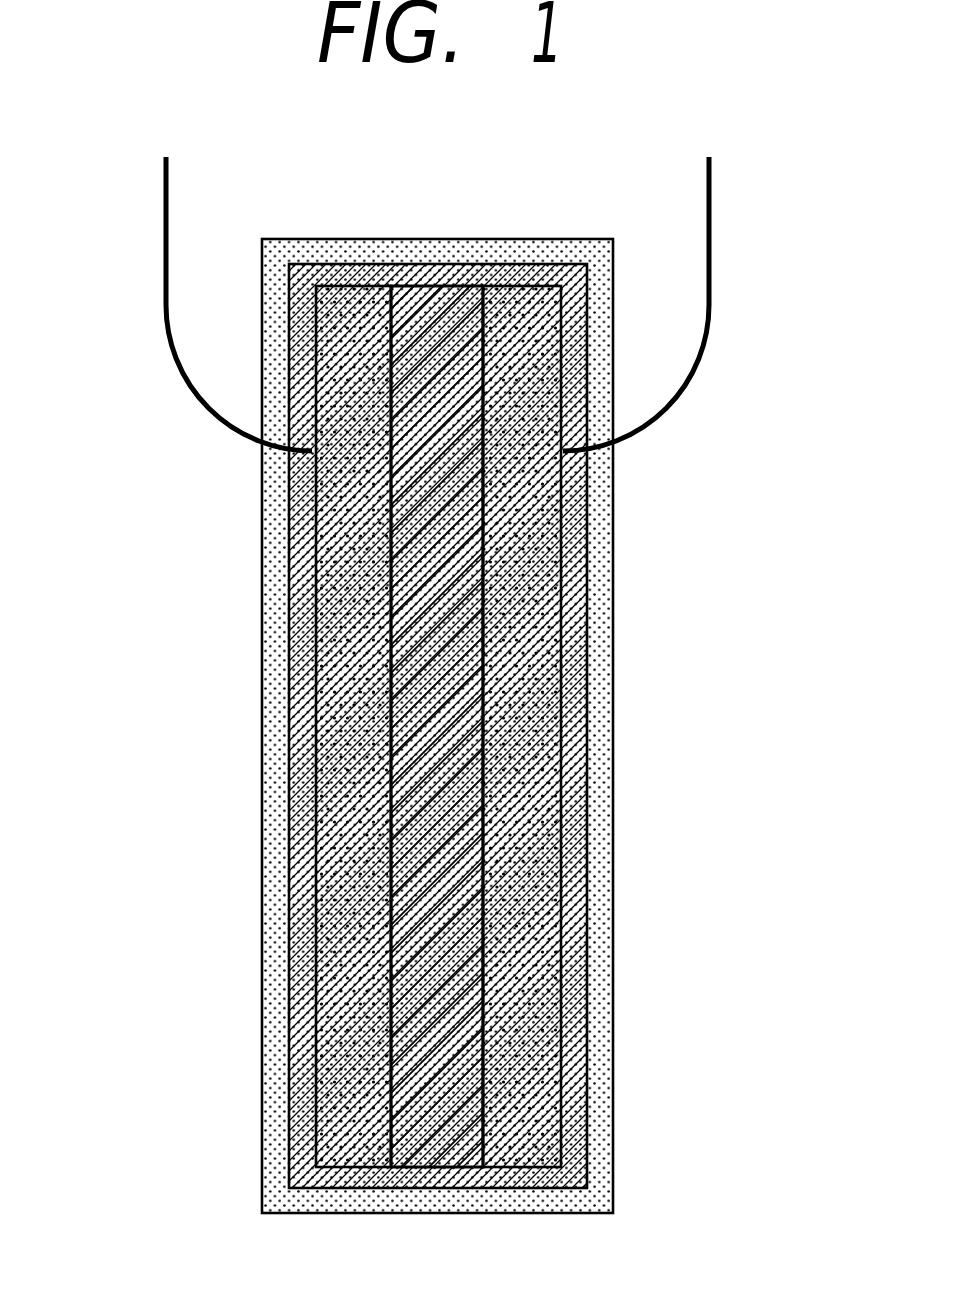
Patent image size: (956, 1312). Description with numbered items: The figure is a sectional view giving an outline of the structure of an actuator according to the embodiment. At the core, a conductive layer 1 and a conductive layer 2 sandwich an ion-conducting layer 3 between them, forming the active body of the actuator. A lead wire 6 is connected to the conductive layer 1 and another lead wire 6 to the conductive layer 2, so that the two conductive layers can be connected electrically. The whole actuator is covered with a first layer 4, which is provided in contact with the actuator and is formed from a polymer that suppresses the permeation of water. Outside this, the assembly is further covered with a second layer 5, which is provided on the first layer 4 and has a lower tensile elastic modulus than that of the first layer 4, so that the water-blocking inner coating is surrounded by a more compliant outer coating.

The conductive layer 1 is at (353, 834).
The conductive layer 2 is at (517, 673).
The ion-conducting layer 3 is at (435, 733).
The first layer 4 is at (573, 1060).
The second layer 5 is at (600, 968).
The lead wire 6 is at (165, 223).